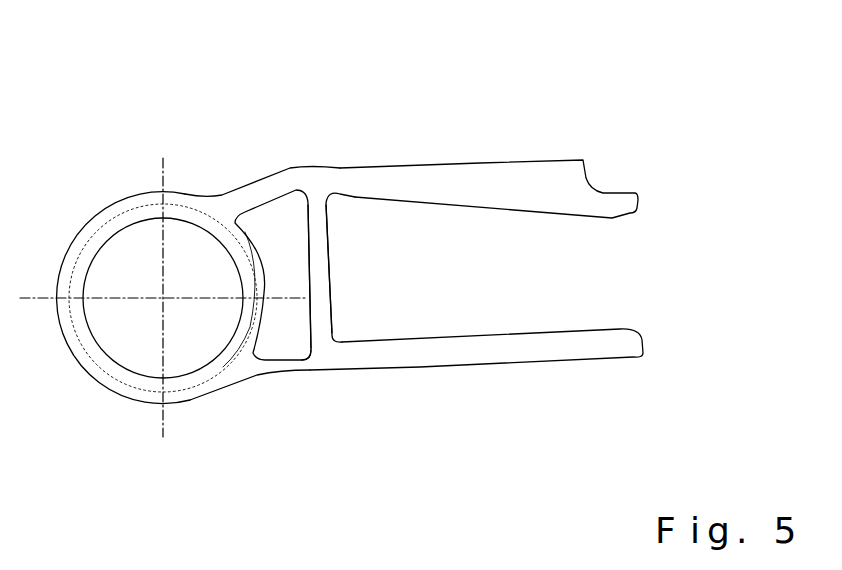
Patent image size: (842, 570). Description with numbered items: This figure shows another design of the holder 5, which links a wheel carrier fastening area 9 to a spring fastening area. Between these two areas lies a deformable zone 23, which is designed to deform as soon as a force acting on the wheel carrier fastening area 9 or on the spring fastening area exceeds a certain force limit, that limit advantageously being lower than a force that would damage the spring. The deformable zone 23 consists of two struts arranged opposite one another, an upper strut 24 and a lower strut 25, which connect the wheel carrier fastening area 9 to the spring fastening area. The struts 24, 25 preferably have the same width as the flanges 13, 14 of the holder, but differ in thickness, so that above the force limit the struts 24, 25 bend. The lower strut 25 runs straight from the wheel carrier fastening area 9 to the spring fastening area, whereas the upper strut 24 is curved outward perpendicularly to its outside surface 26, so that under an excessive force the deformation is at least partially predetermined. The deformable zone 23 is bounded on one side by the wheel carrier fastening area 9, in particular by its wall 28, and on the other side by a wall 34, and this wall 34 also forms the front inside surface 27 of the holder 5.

The holder 5 is at (142, 149).
The wheel carrier fastening area 9 is at (123, 372).
The flange 13 is at (467, 350).
The flange 14 is at (543, 185).
The deformable zone 23 is at (300, 330).
The upper strut 24 is at (282, 183).
The lower strut 25 is at (277, 367).
The outside surface 26 is at (245, 183).
The front inside surface 27 is at (337, 300).
The wall 28 is at (257, 320).
The wall 34 is at (322, 257).